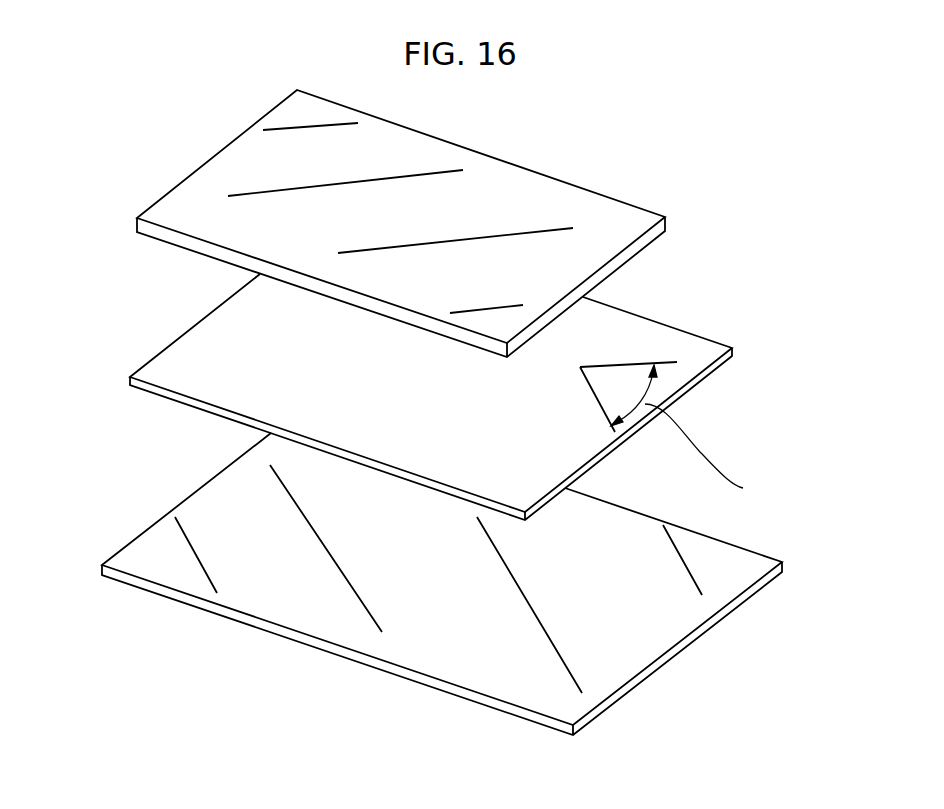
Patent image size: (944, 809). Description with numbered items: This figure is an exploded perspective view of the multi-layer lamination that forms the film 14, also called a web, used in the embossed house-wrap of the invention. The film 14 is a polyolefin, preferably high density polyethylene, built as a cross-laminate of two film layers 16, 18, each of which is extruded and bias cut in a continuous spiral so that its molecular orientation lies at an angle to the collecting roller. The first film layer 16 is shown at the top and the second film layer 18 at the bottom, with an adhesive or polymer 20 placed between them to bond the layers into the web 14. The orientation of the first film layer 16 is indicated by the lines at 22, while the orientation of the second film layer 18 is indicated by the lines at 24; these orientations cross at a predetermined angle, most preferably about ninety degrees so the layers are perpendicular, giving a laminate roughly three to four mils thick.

The film 14 is at (115, 113).
The first film layer 16 is at (620, 220).
The second film layer 18 is at (727, 549).
The adhesive or polymer 20 is at (703, 358).
The lines indicating orientation of first film layer 22 is at (515, 232).
The lines indicating orientation of second film layer 24 is at (600, 408).